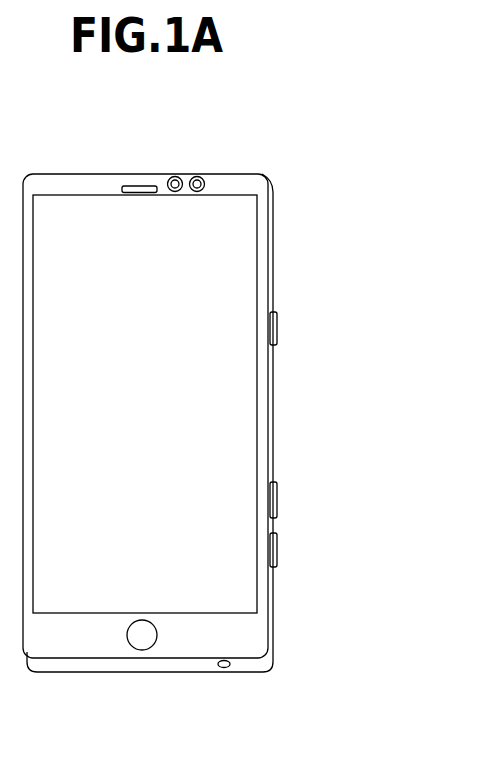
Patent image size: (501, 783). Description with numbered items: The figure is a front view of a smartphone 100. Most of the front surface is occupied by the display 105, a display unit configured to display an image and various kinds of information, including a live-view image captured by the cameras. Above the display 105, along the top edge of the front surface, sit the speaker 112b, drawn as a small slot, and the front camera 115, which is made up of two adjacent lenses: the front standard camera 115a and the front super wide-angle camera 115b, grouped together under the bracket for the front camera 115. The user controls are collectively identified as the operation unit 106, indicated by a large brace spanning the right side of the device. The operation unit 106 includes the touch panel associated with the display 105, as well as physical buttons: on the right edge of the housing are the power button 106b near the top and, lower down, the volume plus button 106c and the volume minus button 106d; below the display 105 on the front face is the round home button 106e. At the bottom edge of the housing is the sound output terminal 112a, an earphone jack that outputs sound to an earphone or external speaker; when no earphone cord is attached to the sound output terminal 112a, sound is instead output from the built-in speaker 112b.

The smartphone 100 is at (250, 174).
The display 105 is at (237, 226).
The operation unit 106 is at (310, 426).
The power button 106b is at (277, 327).
The volume plus button 106c is at (277, 497).
The volume minus button 106d is at (277, 550).
The home button 106e is at (253, 635).
The sound output terminal 112a is at (232, 668).
The speaker 112b is at (136, 184).
The front camera 115 is at (190, 135).
The front standard camera 115a is at (172, 177).
The front super wide-angle camera 115b is at (200, 177).